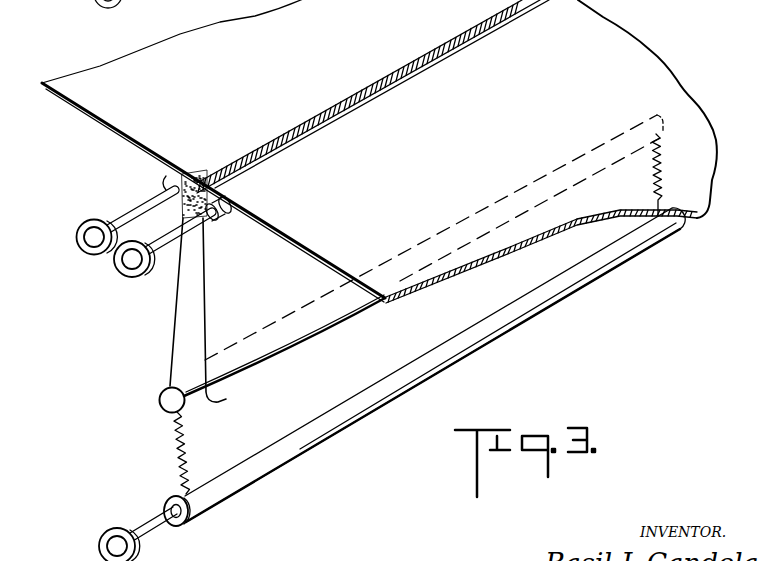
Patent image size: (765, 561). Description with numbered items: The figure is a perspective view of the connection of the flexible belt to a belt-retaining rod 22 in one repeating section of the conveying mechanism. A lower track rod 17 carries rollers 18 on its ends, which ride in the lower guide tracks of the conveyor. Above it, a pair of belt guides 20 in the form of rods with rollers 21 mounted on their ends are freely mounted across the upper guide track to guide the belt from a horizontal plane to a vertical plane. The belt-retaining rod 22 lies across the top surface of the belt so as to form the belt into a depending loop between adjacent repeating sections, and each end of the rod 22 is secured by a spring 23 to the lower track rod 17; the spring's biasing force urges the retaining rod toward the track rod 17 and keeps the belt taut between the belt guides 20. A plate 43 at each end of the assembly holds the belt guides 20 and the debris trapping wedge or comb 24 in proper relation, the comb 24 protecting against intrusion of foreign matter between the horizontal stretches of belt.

The lower track rod 17 is at (256, 484).
The rollers 18 is at (111, 537).
The belt guides 20 is at (160, 178).
The rollers 21 is at (114, 265).
The belt-retaining rod 22 is at (165, 389).
The spring 23 is at (188, 444).
The debris trapping wedge or comb 24 is at (393, 70).
The plate 43 is at (203, 178).